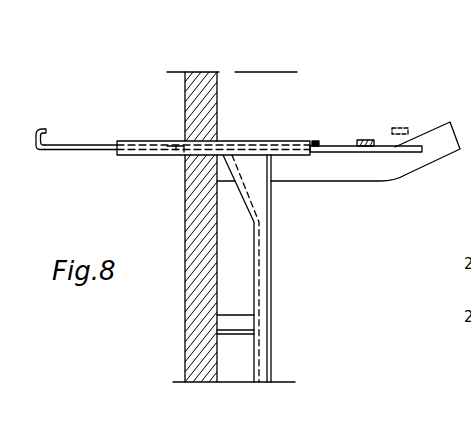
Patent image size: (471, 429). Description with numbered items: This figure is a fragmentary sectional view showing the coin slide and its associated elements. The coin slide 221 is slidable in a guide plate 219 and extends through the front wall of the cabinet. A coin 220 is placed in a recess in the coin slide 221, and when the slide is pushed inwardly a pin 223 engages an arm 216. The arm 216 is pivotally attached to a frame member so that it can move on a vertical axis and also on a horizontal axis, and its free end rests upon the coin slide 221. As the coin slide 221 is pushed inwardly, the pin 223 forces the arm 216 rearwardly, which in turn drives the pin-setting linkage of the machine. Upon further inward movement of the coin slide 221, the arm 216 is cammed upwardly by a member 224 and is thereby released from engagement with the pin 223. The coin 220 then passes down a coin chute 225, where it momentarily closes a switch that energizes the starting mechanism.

The arm 216 is at (392, 128).
The guide plate 219 is at (138, 156).
The coin 220 is at (176, 145).
The coin slide 221 is at (72, 145).
The pin 223 is at (316, 140).
The member 224 is at (409, 167).
The coin chute 225 is at (271, 252).